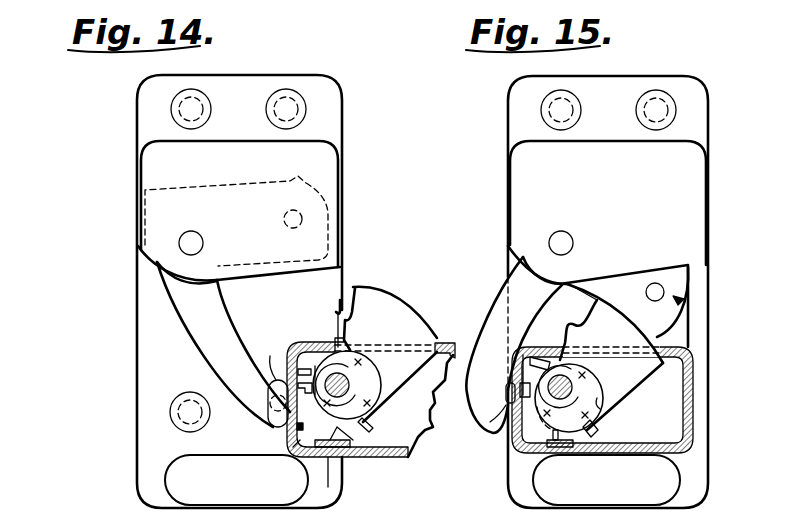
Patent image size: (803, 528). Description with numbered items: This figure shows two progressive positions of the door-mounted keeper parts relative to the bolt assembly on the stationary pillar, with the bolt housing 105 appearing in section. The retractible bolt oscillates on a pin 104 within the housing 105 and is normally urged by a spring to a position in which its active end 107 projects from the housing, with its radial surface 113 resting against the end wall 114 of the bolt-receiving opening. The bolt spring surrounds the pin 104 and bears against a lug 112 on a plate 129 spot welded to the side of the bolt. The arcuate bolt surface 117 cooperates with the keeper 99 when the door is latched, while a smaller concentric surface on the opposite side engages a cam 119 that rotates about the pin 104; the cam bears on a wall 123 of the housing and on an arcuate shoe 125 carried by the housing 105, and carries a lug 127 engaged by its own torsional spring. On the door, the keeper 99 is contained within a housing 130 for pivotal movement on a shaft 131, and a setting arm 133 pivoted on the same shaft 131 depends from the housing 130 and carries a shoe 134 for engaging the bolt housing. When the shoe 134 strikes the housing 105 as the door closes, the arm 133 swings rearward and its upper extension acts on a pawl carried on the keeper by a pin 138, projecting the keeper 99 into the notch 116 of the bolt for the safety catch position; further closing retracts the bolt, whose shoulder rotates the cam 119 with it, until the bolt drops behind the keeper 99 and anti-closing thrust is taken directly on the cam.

In FIG. 15, the keeper 99 is at (684, 299).
In FIG. 14, the pin 104 is at (349, 386).
In FIG. 15, the pin 104 is at (572, 391).
In FIG. 14, the housing 105 is at (393, 460).
In FIG. 15, the housing 105 is at (694, 363).
In FIG. 14, the active end 107 is at (398, 372).
In FIG. 15, the active end 107 is at (615, 360).
In FIG. 14, the lug 112 is at (268, 398).
In FIG. 15, the lug 112 is at (508, 390).
In FIG. 14, the radial surface 113 is at (337, 326).
In FIG. 15, the radial surface 113 is at (564, 343).
In FIG. 14, the end wall 114 is at (339, 341).
In FIG. 14, the notch 116 is at (337, 311).
In FIG. 14, the arcuate bolt surface 117 is at (388, 287).
In FIG. 15, the arcuate bolt surface 117 is at (647, 332).
In FIG. 14, the cam 119 is at (362, 457).
In FIG. 15, the cam 119 is at (518, 448).
In FIG. 14, the wall 123 is at (282, 430).
In FIG. 15, the wall 123 is at (515, 395).
In FIG. 14, the arcuate shoe 125 is at (328, 487).
In FIG. 15, the arcuate shoe 125 is at (573, 454).
In FIG. 14, the lug 127 is at (300, 368).
In FIG. 15, the lug 127 is at (513, 371).
In FIG. 14, the plate 129 is at (293, 447).
In FIG. 15, the plate 129 is at (600, 409).
In FIG. 14, the housing 130 is at (152, 168).
In FIG. 15, the housing 130 is at (517, 203).
In FIG. 14, the shaft 131 is at (179, 243).
In FIG. 15, the shaft 131 is at (549, 243).
In FIG. 14, the setting arm 133 is at (188, 308).
In FIG. 15, the setting arm 133 is at (510, 279).
In FIG. 14, the shoe 134 is at (270, 359).
In FIG. 15, the shoe 134 is at (490, 422).
In FIG. 14, the pin 138 is at (285, 225).
In FIG. 15, the pin 138 is at (665, 291).